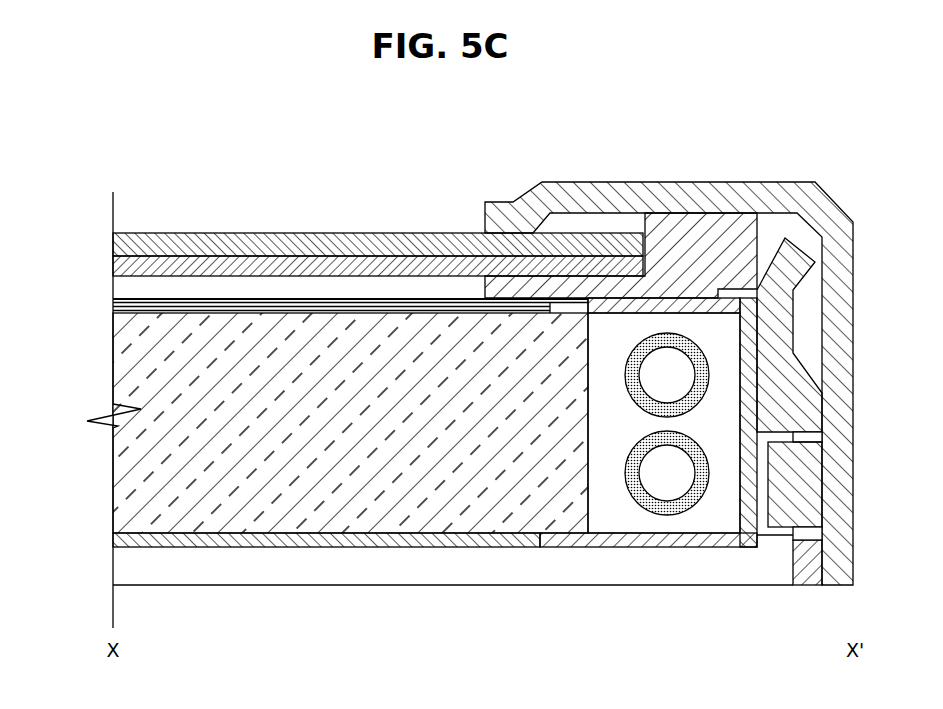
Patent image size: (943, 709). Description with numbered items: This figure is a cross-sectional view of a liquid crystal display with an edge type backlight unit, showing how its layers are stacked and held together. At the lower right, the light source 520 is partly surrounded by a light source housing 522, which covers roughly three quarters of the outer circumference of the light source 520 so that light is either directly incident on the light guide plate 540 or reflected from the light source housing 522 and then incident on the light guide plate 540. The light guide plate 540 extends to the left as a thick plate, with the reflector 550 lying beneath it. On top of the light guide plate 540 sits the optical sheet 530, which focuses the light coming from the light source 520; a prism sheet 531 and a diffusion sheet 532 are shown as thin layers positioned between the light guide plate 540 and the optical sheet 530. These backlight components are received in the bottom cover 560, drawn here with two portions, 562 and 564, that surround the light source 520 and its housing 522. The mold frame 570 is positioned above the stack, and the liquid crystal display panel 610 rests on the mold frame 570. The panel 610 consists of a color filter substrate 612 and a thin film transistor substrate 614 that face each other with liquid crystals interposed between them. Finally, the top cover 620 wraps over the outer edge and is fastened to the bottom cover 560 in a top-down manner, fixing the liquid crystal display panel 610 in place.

The light source 520 is at (608, 513).
The light source housing 522 is at (641, 506).
The optical sheet 530 is at (110, 298).
The prism sheet 531 is at (113, 305).
The diffusion sheet 532 is at (113, 311).
The light guide plate 540 is at (125, 471).
The reflector 550 is at (115, 540).
The bottom cover 560 is at (681, 472).
The frame body 562 is at (690, 575).
The frame fixing member 564 is at (787, 393).
The mold frame 570 is at (683, 233).
The liquid crystal display panel 610 is at (378, 197).
The color filter substrate 612 is at (262, 242).
The thin film transistor substrate 614 is at (303, 267).
The top cover 620 is at (770, 192).